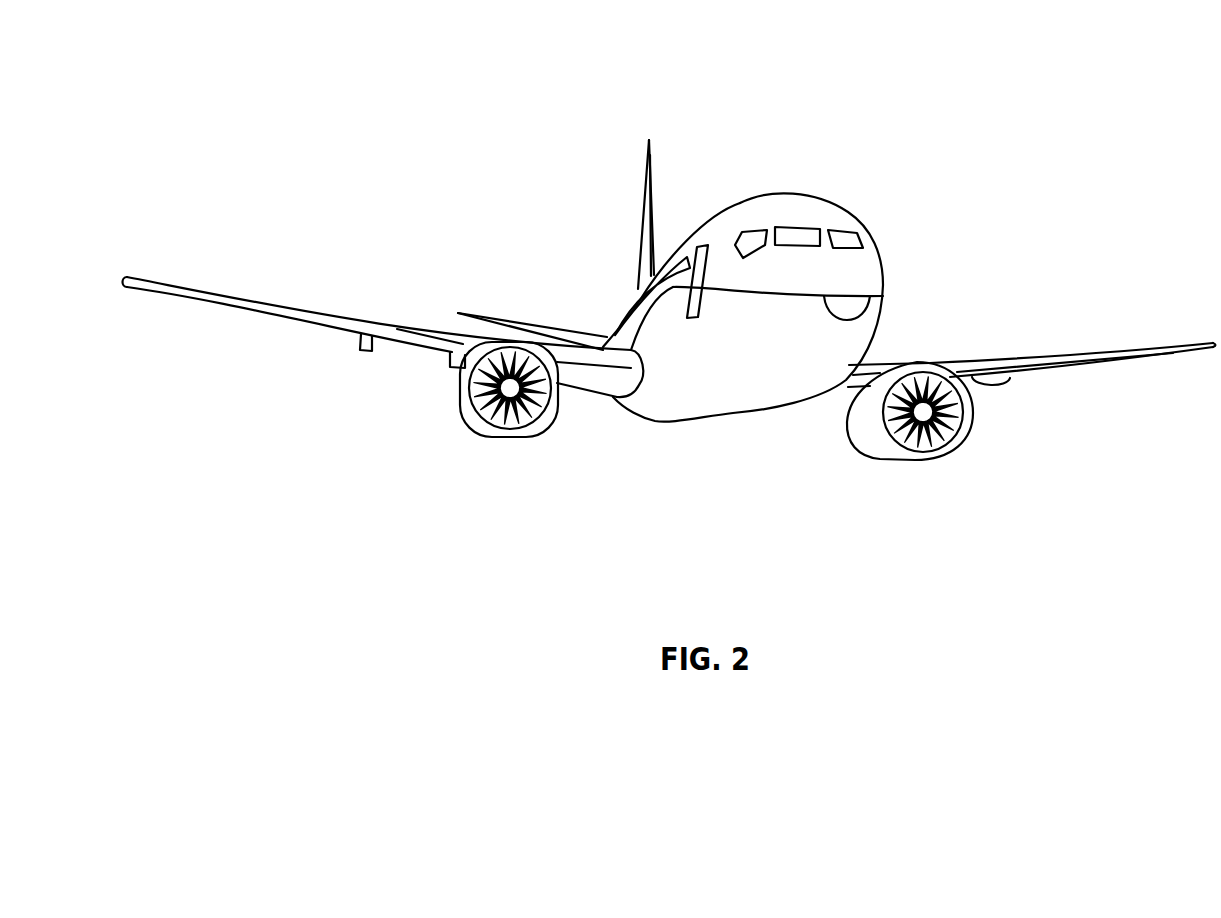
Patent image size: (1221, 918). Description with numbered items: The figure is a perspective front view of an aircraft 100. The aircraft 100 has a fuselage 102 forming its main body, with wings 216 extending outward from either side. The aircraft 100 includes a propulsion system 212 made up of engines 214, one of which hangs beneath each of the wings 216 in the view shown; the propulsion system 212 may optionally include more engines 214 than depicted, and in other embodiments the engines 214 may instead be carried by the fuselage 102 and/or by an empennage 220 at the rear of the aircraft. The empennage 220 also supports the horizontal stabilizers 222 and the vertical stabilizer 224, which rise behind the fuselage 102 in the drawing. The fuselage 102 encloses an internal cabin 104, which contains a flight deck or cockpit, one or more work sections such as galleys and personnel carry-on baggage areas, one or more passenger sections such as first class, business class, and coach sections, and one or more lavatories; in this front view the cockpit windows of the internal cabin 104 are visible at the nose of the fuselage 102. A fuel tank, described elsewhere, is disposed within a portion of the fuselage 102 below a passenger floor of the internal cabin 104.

The aircraft 100 is at (398, 88).
The fuselage 102 is at (878, 263).
The internal cabin 104 is at (800, 237).
The propulsion system 212 is at (428, 400).
The engines 214 is at (503, 438).
The wings 216 is at (270, 303).
The empennage 220 is at (637, 293).
The horizontal stabilizers 222 is at (500, 312).
The vertical stabilizer 224 is at (647, 183).